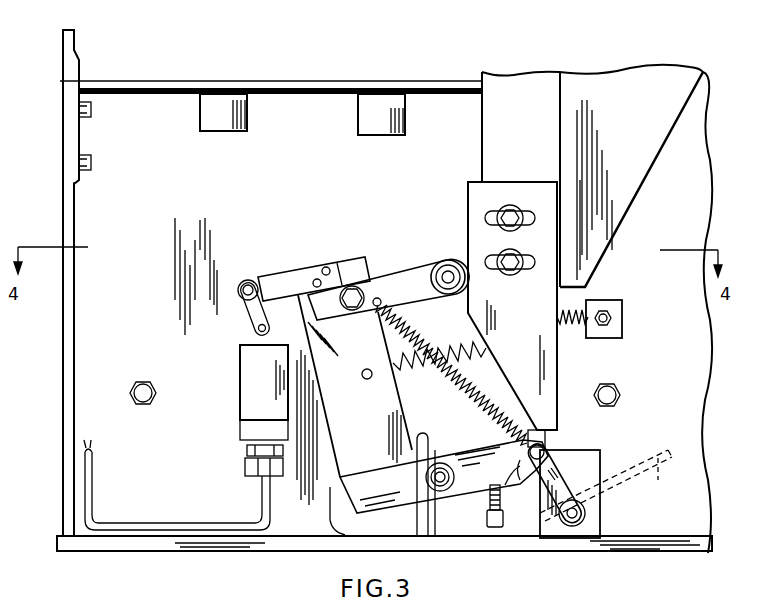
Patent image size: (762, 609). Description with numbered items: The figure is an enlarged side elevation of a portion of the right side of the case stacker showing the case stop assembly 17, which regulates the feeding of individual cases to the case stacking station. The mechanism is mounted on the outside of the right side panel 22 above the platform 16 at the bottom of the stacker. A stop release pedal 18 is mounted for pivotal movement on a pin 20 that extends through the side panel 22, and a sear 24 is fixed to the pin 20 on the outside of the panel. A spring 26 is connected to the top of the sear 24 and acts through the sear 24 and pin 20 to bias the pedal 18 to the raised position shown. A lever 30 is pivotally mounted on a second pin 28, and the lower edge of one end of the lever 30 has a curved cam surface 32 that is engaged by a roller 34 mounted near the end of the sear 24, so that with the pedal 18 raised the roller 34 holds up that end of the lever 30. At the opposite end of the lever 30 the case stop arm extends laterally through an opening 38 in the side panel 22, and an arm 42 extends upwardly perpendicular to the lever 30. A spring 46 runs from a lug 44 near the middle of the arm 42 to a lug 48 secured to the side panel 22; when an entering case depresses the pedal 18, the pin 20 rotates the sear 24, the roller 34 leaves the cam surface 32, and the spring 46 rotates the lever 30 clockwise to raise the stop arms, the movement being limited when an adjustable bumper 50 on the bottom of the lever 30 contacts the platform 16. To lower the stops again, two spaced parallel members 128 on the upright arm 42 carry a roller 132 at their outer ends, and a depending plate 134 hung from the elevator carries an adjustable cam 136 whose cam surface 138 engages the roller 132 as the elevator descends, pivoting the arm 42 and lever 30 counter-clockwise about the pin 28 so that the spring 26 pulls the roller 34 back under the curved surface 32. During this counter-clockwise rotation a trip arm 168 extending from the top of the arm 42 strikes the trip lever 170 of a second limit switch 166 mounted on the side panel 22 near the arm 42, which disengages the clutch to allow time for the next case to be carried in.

The platform 16 is at (105, 541).
The case stop assembly 17 is at (292, 528).
The stop release pedal 18 is at (669, 479).
The pin 20 is at (598, 512).
The side panel 22 is at (119, 296).
The sear 24 is at (557, 487).
The spring 26 is at (456, 384).
The second pin 28 is at (440, 488).
The lever 30 is at (378, 489).
The curved cam surface 32 is at (525, 468).
The roller 34 is at (545, 455).
The opening 38 is at (343, 528).
The arm 42 is at (360, 441).
The lug 44 is at (366, 381).
The spring 46 is at (458, 346).
The lug 48 is at (613, 318).
The adjustable bumper 50 is at (498, 532).
The parallel members 128 is at (385, 284).
The roller 132 is at (462, 252).
The depending plate 134 is at (642, 134).
The adjustable cam 136 is at (522, 350).
The cam surface 138 is at (507, 400).
The second limit switch 166 is at (240, 393).
The trip arm 168 is at (297, 276).
The trip lever 170 is at (250, 302).